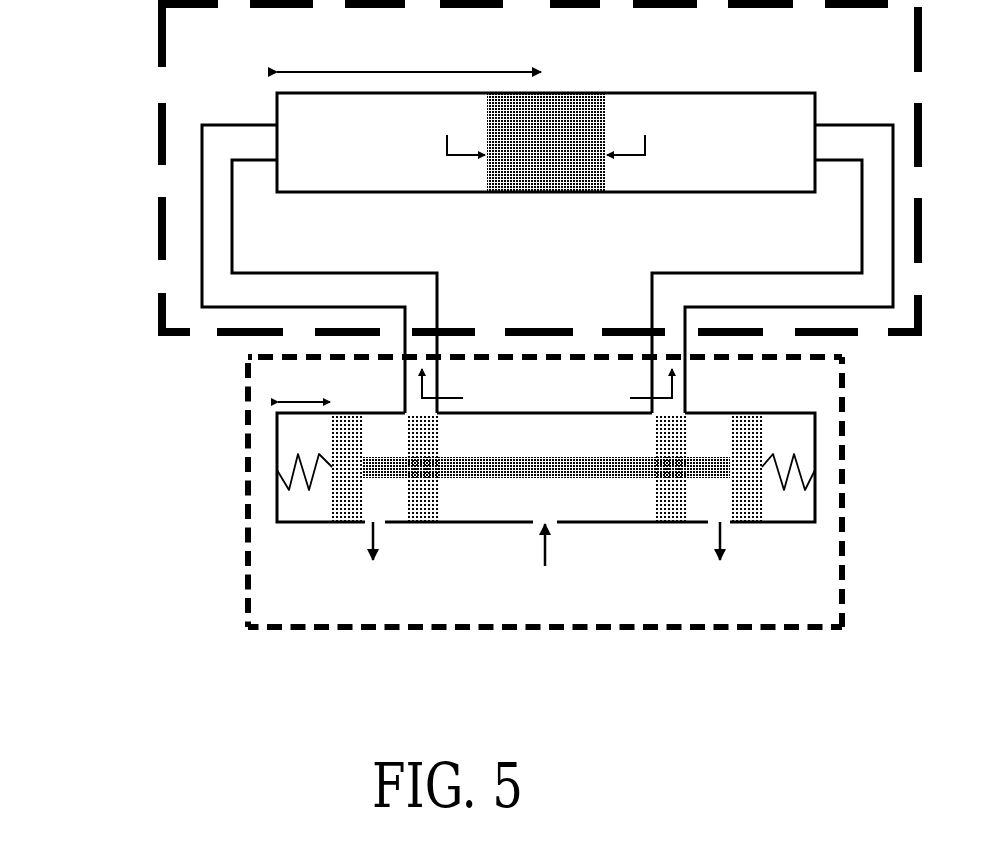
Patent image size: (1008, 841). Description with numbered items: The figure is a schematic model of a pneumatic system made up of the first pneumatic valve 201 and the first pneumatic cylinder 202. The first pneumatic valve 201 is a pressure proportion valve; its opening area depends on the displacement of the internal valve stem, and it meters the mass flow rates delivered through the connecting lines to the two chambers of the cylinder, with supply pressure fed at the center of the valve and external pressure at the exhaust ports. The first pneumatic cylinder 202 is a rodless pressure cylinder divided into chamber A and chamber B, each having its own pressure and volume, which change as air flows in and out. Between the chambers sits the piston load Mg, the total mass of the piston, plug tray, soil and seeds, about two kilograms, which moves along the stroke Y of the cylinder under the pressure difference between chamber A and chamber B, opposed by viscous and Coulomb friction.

The first pneumatic valve 201 is at (248, 505).
The first pneumatic cylinder 202 is at (160, 212).
The chamber A is at (390, 150).
The chamber B is at (699, 150).
The piston load Mg is at (546, 142).
The piston stroke Y is at (409, 47).